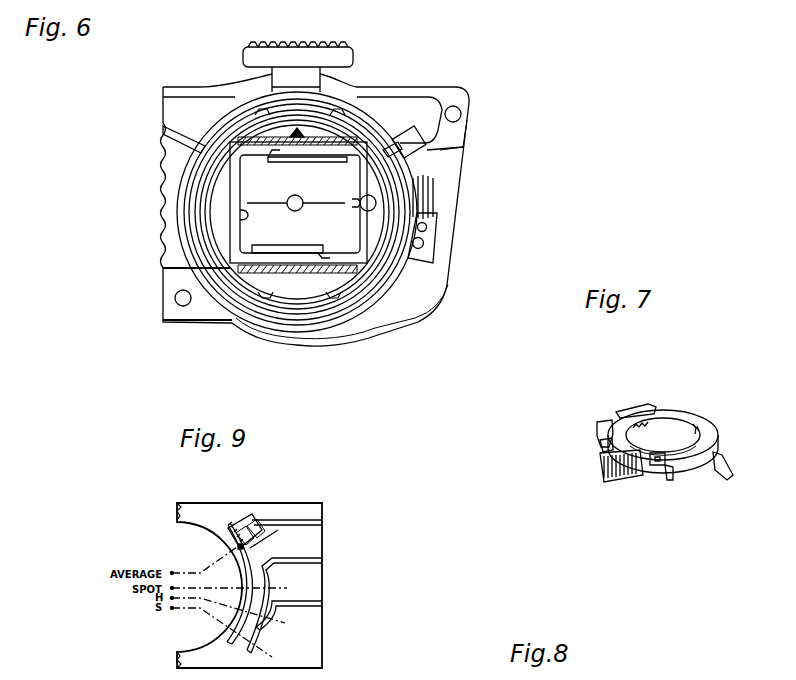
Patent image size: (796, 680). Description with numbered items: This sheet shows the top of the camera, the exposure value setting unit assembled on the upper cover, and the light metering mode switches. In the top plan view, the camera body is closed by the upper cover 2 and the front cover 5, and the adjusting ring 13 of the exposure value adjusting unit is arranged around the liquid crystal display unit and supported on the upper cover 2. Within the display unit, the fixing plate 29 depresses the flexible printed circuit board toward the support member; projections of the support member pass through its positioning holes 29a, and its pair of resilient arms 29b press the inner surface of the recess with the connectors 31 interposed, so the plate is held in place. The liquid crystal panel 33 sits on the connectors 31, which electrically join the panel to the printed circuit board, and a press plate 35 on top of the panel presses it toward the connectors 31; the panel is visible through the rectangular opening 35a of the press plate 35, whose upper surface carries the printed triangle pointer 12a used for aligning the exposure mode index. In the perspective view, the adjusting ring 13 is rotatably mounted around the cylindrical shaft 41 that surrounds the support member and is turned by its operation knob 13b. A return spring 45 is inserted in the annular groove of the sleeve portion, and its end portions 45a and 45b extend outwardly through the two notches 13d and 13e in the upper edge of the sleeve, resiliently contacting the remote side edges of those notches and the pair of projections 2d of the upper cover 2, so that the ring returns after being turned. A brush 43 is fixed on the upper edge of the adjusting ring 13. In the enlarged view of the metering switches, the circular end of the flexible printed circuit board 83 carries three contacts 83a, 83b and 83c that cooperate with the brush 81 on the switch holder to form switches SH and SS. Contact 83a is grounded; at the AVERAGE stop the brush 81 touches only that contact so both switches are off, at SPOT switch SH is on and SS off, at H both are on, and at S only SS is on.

In FIG. 6, the upper cover 2 is at (178, 283).
In FIG. 6, the projections 2d is at (172, 148).
In FIG. 7, the projections 2d is at (599, 420).
In FIG. 6, the front cover 5 is at (460, 100).
In FIG. 6, the pointer 12a is at (312, 132).
In FIG. 7, the adjusting ring 13 is at (700, 453).
In FIG. 6, the operation knob 13b is at (287, 140).
In FIG. 7, the operation knob 13b is at (617, 474).
In FIG. 7, the notch 13d is at (640, 424).
In FIG. 7, the notch 13e is at (657, 464).
In FIG. 6, the fixing plate 29 is at (250, 97).
In FIG. 6, the positioning holes 29a is at (368, 203).
In FIG. 6, the resilient arms 29b is at (297, 128).
In FIG. 6, the connectors 31 is at (405, 147).
In FIG. 6, the liquid crystal panel 33 is at (220, 194).
In FIG. 6, the press plate 35 is at (268, 118).
In FIG. 6, the rectangular opening 35a is at (215, 226).
In FIG. 6, the cylindrical shaft 41 is at (232, 287).
In FIG. 7, the cylindrical shaft 41 is at (715, 430).
In FIG. 6, the brush 43 is at (433, 215).
In FIG. 7, the brush 43 is at (617, 412).
In FIG. 6, the return spring 45 is at (360, 122).
In FIG. 7, the end portion of return spring 45a is at (607, 445).
In FIG. 7, the end portion of return spring 45b is at (658, 468).
In FIG. 9, the brush 81 is at (243, 527).
In FIG. 9, the flexible printed circuit board 83 is at (314, 651).
In FIG. 9, the contact 83a is at (324, 522).
In FIG. 9, the contact 83b is at (322, 560).
In FIG. 9, the contact 83c is at (322, 603).